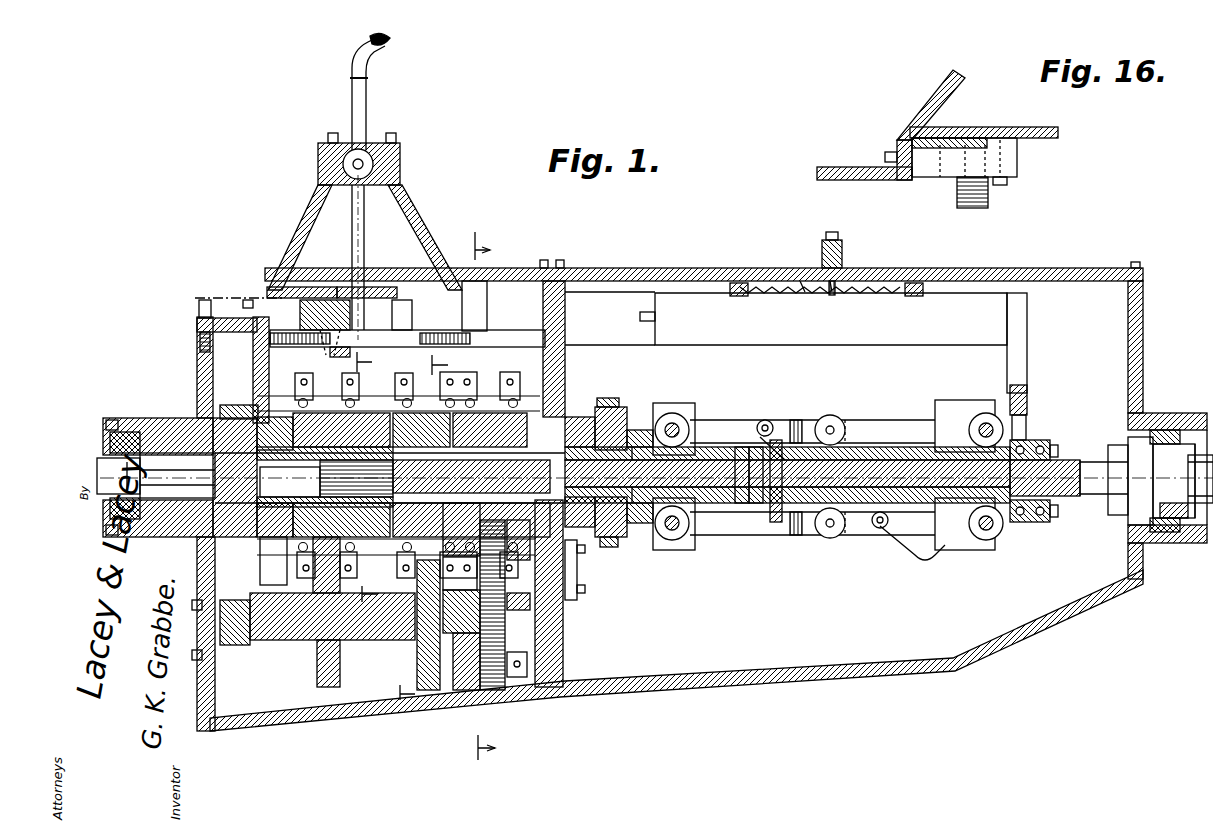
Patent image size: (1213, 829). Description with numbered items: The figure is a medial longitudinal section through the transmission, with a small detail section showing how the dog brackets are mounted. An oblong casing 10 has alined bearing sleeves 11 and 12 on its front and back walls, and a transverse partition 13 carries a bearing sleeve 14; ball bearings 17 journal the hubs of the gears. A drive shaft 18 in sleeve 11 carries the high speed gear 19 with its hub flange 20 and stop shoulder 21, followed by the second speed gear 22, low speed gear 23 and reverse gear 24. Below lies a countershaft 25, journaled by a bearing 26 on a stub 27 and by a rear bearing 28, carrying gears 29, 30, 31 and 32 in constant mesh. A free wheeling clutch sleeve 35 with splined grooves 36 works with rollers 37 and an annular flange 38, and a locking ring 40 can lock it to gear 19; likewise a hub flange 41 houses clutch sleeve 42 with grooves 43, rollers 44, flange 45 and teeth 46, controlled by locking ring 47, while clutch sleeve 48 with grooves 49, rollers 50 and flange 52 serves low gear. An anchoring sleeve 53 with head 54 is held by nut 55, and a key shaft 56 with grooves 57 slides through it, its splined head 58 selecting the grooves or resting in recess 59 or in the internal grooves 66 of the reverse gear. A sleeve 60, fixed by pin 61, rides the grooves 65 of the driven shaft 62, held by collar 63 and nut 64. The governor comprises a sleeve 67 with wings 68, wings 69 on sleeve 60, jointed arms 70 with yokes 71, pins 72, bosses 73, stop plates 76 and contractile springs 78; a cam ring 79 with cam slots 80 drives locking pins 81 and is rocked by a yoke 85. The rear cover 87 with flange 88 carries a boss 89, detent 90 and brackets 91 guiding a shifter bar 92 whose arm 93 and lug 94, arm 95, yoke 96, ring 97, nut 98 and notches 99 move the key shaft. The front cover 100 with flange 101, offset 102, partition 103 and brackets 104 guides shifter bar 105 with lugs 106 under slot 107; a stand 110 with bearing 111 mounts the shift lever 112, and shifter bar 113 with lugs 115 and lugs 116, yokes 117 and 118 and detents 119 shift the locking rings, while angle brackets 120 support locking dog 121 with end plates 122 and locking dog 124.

In FIG. 1, the casing 10 is at (806, 672).
In FIG. 1, the bearing sleeve 11 is at (178, 418).
In FIG. 1, the bearing sleeve 12 is at (1162, 414).
In FIG. 1, the partition 13 is at (567, 370).
In FIG. 1, the bearing sleeve 14 is at (580, 417).
In FIG. 1, the ball bearings 17 is at (478, 382).
In FIG. 1, the drive shaft 18 is at (156, 475).
In FIG. 1, the high speed gear 19 is at (236, 420).
In FIG. 1, the hub flange 20 is at (272, 552).
In FIG. 1, the stop shoulder 21 is at (260, 397).
In FIG. 1, the second speed gear 22 is at (318, 400).
In FIG. 1, the low speed gear 23 is at (457, 380).
In FIG. 1, the reverse gear 24 is at (508, 380).
In FIG. 1, the countershaft 25 is at (302, 725).
In FIG. 1, the bearing 26 is at (250, 652).
In FIG. 1, the stub 27 is at (196, 658).
In FIG. 1, the bearing 28 is at (557, 636).
In FIG. 1, the gear 29 is at (240, 688).
In FIG. 1, the gear 30 is at (332, 688).
In FIG. 1, the gear 31 is at (462, 695).
In FIG. 1, the gear 32 is at (497, 690).
In FIG. 1, the free wheeling clutch sleeve 35 is at (290, 482).
In FIG. 1, the splined grooves 36 is at (322, 488).
In FIG. 1, the free wheeling clutch rollers 37 is at (213, 548).
In FIG. 1, the annular flange 38 is at (292, 262).
In FIG. 1, the locking ring 40 is at (272, 572).
In FIG. 1, the hub flange 41 is at (372, 556).
In FIG. 1, the free wheeling clutch sleeve 42 is at (403, 520).
In FIG. 1, the splined grooves 43 is at (390, 478).
In FIG. 1, the free wheeling clutch rollers 44 is at (323, 431).
In FIG. 1, the annular flange 45 is at (412, 396).
In FIG. 1, the teeth 46 is at (386, 380).
In FIG. 1, the locking ring 47 is at (392, 600).
In FIG. 1, the free wheeling clutch sleeve 48 is at (452, 640).
In FIG. 1, the splined grooves 49 is at (430, 690).
In FIG. 1, the free wheeling clutch rollers 50 is at (421, 429).
In FIG. 1, the annular flange 52 is at (418, 686).
In FIG. 1, the anchoring sleeve 53 is at (607, 406).
In FIG. 1, the annular head 54 is at (640, 430).
In FIG. 1, the nut 55 is at (582, 556).
In FIG. 1, the key shaft 56 is at (740, 503).
In FIG. 1, the longitudinal grooves 57 is at (758, 503).
In FIG. 1, the splined head 58 is at (403, 477).
In FIG. 1, the recess 59 is at (468, 652).
In FIG. 1, the sleeve 60 is at (872, 447).
In FIG. 1, the pin 61 is at (780, 522).
In FIG. 1, the driven shaft 62 is at (1170, 481).
In FIG. 1, the collar 63 is at (1175, 520).
In FIG. 1, the nut 64 is at (1120, 516).
In FIG. 1, the grooves 65 is at (1068, 460).
In FIG. 1, the internal grooves 66 is at (490, 430).
In FIG. 1, the sleeve 67 is at (675, 542).
In FIG. 1, the wings 68 is at (700, 406).
In FIG. 1, the wings 69 is at (960, 405).
In FIG. 1, the governor arms 70 is at (792, 420).
In FIG. 1, the yokes 71 is at (845, 430).
In FIG. 1, the pins 72 is at (832, 423).
In FIG. 1, the bosses 73 is at (765, 420).
In FIG. 1, the stop plates 76 is at (926, 556).
In FIG. 1, the contractile springs 78 is at (880, 528).
In FIG. 1, the cam ring 79 is at (634, 428).
In FIG. 1, the cam slots 80 is at (614, 560).
In FIG. 1, the locking pins 81 is at (640, 540).
In FIG. 1, the yoke 85 is at (586, 580).
In FIG. 1, the rear cover 87 is at (1080, 268).
In FIG. 1, the marginal flange 88 is at (1143, 312).
In FIG. 1, the boss 89 is at (842, 250).
In FIG. 1, the spring pressed detent 90 is at (830, 295).
In FIG. 1, the brackets 91 is at (740, 298).
In FIG. 1, the shifter bar 92 is at (958, 268).
In FIG. 1, the pendent arm 93 is at (655, 296).
In FIG. 1, the lug 94 is at (650, 318).
In FIG. 1, the pendent arm 95 is at (1027, 332).
In FIG. 1, the yoke 96 is at (1030, 420).
In FIG. 1, the grooved ring 97 is at (1022, 524).
In FIG. 1, the nut 98 is at (1040, 522).
In FIG. 1, the notches 99 is at (862, 292).
In FIG. 1, the front cover 100 is at (492, 268).
In FIG. 16, the front cover 100 is at (1052, 140).
In FIG. 1, the marginal flange 101 is at (552, 260).
In FIG. 1, the transverse offset 102 is at (255, 290).
In FIG. 16, the transverse offset 102 is at (897, 145).
In FIG. 1, the partition 103 is at (474, 304).
In FIG. 1, the brackets 104 is at (199, 338).
In FIG. 1, the shifter bar 105 is at (500, 332).
In FIG. 1, the lugs 106 is at (432, 290).
In FIG. 1, the slot 107 is at (392, 278).
In FIG. 1, the shift lever stand 110 is at (430, 214).
In FIG. 1, the bearing 111 is at (400, 152).
In FIG. 1, the shift lever 112 is at (352, 72).
In FIG. 1, the shifter bar 113 is at (407, 342).
In FIG. 1, the lugs 115 is at (364, 262).
In FIG. 1, the lugs 116 is at (250, 302).
In FIG. 1, the yoke 117 is at (456, 280).
In FIG. 1, the yoke 118 is at (200, 350).
In FIG. 1, the spring pressed detents 119 is at (404, 320).
In FIG. 16, the angle brackets 120 is at (952, 168).
In FIG. 1, the locking dog 121 is at (328, 298).
In FIG. 1, the end plates 122 is at (322, 292).
In FIG. 16, the end plates 122 is at (968, 136).
In FIG. 1, the locking dog 124 is at (264, 298).
In FIG. 16, the locking dog 124 is at (935, 128).